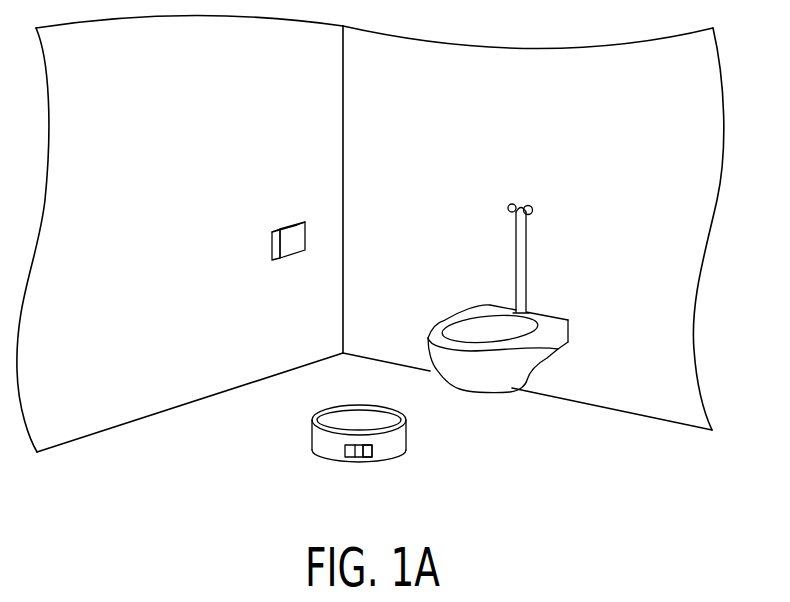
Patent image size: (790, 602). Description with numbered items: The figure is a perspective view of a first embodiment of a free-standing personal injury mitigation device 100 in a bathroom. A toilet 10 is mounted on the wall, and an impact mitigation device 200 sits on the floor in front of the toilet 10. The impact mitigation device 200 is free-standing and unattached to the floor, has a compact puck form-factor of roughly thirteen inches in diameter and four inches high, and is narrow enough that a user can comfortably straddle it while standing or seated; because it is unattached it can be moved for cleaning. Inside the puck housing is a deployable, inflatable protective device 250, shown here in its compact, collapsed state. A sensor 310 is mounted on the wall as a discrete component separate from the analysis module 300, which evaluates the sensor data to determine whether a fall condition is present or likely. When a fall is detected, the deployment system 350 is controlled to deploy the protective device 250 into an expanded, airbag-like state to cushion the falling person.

The toilet 10 is at (483, 373).
The personal injury mitigation device 100 is at (448, 455).
The impact mitigation device 200 is at (387, 452).
The protective device 250 is at (333, 422).
The analysis module 300 is at (348, 458).
The sensor 310 is at (288, 222).
The deployment system 350 is at (367, 458).